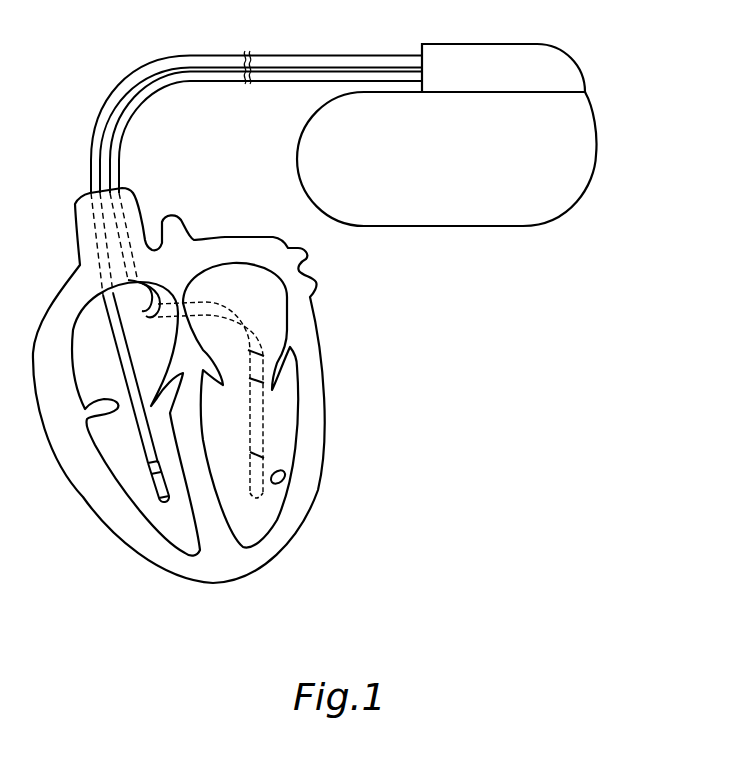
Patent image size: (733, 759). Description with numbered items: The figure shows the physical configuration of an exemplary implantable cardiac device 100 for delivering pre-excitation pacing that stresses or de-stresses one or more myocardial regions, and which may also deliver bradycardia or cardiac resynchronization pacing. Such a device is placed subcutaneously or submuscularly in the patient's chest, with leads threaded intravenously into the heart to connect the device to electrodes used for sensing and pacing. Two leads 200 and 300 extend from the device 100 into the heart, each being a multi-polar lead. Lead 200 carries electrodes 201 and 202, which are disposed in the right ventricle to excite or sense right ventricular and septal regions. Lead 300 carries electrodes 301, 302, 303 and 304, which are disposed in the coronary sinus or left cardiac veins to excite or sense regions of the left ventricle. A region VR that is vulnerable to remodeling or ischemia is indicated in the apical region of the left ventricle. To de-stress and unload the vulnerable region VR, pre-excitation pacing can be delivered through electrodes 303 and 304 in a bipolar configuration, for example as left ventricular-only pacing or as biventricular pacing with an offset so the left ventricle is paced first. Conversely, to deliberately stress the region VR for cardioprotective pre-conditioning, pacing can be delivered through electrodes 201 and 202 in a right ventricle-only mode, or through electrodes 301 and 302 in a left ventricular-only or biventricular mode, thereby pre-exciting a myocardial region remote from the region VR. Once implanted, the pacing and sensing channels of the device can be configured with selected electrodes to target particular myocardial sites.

The implantable cardiac device 100 is at (611, 93).
The lead 200 is at (190, 62).
The electrode 201 is at (148, 468).
The electrode 202 is at (167, 507).
The lead 300 is at (221, 84).
The electrode 301 is at (253, 352).
The electrode 302 is at (257, 380).
The electrode 303 is at (258, 455).
The electrode 304 is at (251, 497).
The vulnerable region VR is at (283, 482).